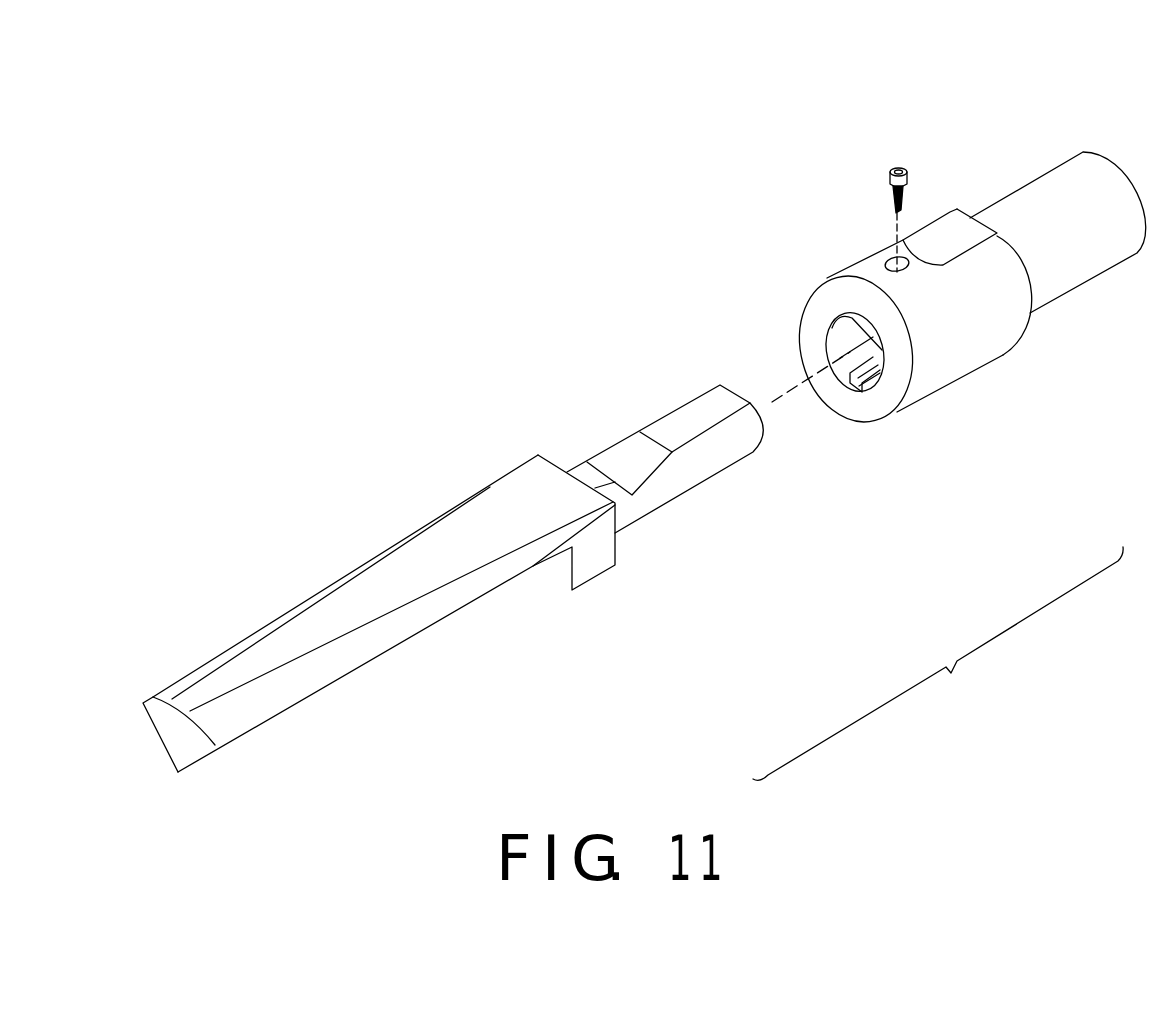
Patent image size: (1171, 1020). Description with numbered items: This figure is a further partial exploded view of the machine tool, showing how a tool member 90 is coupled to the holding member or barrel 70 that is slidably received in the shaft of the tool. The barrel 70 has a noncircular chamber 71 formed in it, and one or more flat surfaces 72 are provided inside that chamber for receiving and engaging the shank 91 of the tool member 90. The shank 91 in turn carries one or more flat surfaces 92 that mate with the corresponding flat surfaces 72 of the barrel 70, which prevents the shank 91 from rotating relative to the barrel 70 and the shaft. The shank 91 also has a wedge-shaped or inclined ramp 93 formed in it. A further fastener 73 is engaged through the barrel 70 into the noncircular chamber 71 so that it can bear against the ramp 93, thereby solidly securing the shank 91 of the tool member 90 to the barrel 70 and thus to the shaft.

The barrel 70 is at (1052, 207).
The noncircular chamber 71 is at (843, 338).
The flat surfaces 72 is at (829, 278).
The fastener 73 is at (898, 163).
The tool member 90 is at (443, 557).
The shank 91 is at (742, 445).
The flat surfaces 92 is at (702, 420).
The ramp 93 is at (617, 463).